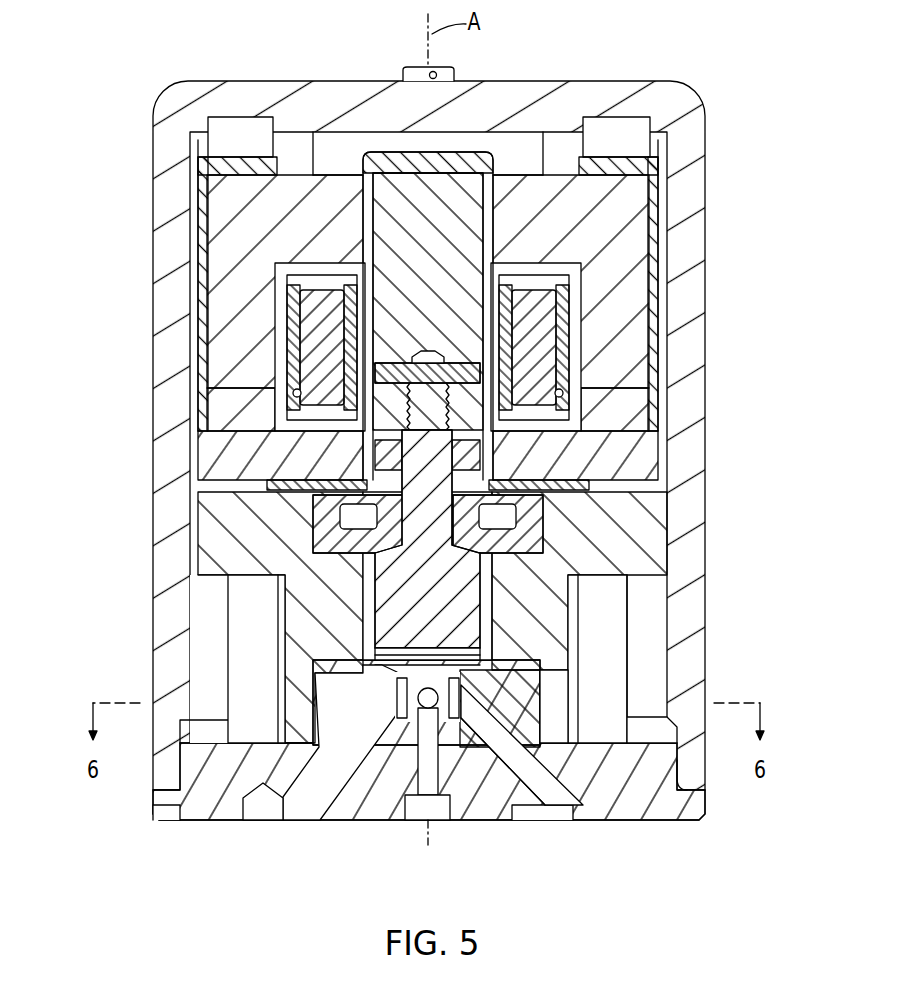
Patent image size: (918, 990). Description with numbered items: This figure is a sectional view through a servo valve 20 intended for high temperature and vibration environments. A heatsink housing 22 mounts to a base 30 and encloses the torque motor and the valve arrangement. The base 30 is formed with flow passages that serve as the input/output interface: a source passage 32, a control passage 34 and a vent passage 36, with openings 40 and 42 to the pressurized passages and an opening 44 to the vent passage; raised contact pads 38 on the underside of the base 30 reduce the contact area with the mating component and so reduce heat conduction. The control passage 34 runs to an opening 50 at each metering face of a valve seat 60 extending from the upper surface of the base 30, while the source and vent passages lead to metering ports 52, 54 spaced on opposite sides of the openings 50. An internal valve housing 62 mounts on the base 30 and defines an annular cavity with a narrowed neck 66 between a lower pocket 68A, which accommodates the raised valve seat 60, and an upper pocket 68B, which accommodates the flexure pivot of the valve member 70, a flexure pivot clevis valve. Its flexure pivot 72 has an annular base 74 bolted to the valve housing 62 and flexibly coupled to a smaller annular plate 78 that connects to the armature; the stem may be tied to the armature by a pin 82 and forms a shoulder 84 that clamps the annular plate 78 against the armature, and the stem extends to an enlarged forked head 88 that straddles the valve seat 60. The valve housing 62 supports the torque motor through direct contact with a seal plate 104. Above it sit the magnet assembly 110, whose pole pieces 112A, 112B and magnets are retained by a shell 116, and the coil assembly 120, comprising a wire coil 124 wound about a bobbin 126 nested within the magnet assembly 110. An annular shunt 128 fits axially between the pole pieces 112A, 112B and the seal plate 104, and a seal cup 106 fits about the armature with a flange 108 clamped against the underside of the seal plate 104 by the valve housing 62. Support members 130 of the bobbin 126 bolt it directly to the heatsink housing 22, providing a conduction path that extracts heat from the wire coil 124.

The servo valve 20 is at (660, 55).
The heatsink housing 22 is at (694, 190).
The base 30 is at (630, 793).
The source passage 32 is at (315, 778).
The control passage 34 is at (422, 775).
The vent passage 36 is at (538, 778).
The contact pads 38 is at (684, 813).
The opening 40 is at (263, 820).
The opening 42 is at (418, 822).
The opening 44 is at (570, 808).
The opening 50 is at (430, 712).
The metering port 52 is at (395, 713).
The metering port 54 is at (457, 713).
The valve seat 60 is at (524, 710).
The valve housing 62 is at (651, 524).
The neck 66 is at (370, 597).
The lower pocket 68A is at (320, 683).
The upper pocket 68B is at (320, 503).
The valve member 70 is at (472, 570).
The flexure pivot 72 is at (522, 507).
The annular base 74 is at (313, 545).
The annular plate 78 is at (476, 455).
The pin 82 is at (450, 368).
The shoulder 84 is at (402, 470).
The head 88 is at (468, 620).
The seal plate 104 is at (651, 463).
The seal cup 106 is at (390, 152).
The flange 108 is at (268, 488).
The magnet assembly 110 is at (232, 213).
The pole piece 112A is at (228, 247).
The pole piece 112B is at (633, 277).
The shell 116 is at (649, 159).
The coil assembly 120 is at (300, 350).
The wire coil 124 is at (533, 332).
The bobbin 126 is at (590, 249).
The annular shunt 128 is at (631, 394).
The support members 130 is at (503, 146).